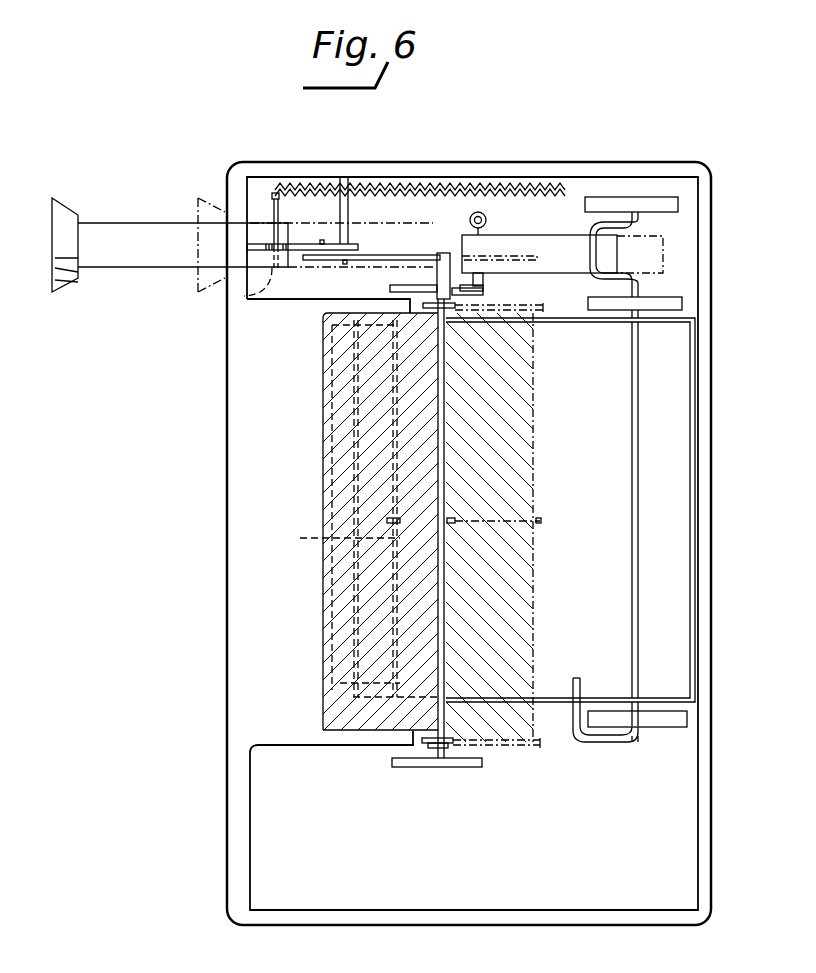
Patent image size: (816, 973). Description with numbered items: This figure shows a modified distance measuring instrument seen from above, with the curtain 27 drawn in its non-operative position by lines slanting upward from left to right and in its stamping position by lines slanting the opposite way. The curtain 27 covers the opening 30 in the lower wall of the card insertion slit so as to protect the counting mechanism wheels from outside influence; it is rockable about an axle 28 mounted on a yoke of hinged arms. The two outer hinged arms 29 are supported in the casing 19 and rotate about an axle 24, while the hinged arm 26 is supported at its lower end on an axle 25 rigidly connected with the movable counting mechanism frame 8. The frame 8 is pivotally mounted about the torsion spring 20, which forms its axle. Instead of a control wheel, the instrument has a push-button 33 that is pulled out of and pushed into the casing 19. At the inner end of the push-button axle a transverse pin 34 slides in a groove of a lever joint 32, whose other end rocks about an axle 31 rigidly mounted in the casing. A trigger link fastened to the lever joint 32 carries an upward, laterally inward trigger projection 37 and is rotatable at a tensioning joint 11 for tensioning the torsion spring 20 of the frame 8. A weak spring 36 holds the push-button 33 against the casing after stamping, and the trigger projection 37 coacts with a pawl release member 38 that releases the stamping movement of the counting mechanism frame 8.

The counting mechanism frame 8 is at (616, 442).
The tensioning joint 11 is at (541, 246).
The casing 19 is at (227, 431).
The torsion spring 20 is at (638, 494).
The axle 24 is at (446, 768).
The axle 25 is at (338, 539).
The hinged arm 26 is at (452, 522).
The curtain 27 is at (430, 578).
The axle 28 is at (447, 605).
The outer hinged arms 29 is at (450, 308).
The opening 30 is at (340, 676).
The axle 31 is at (343, 262).
The lever joint 32 is at (252, 244).
The push-button 33 is at (126, 232).
The transverse pin 34 is at (244, 296).
The weak spring 36 is at (402, 184).
The trigger projection 37 is at (443, 253).
The pawl release member 38 is at (478, 293).